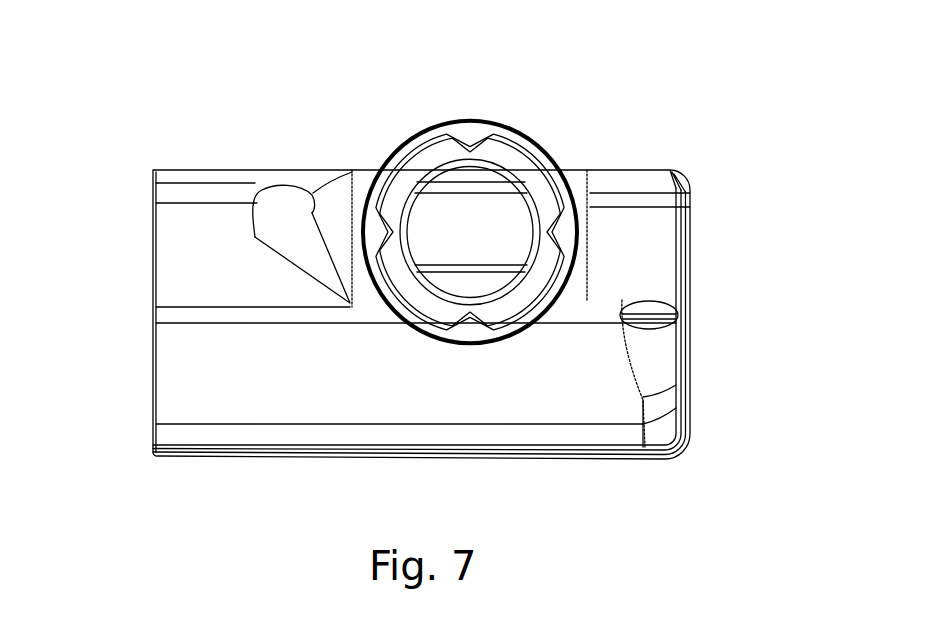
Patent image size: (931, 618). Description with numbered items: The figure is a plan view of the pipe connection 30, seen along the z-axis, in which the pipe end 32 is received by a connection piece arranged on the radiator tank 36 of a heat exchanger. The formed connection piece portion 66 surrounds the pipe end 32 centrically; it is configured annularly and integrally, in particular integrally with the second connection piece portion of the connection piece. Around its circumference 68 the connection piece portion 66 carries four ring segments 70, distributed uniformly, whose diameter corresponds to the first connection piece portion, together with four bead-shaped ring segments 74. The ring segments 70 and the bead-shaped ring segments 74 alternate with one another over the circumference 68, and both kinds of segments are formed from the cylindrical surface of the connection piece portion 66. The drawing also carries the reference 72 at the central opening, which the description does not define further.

The pipe connection 30 is at (660, 82).
The pipe end 32 is at (407, 137).
The radiator tank 36 is at (173, 396).
The formed connection piece portion 66 is at (523, 143).
The circumference 68 is at (560, 232).
The ring segments 70 is at (375, 150).
The central opening 72 is at (473, 212).
The bead-shaped ring segments 74 is at (462, 138).